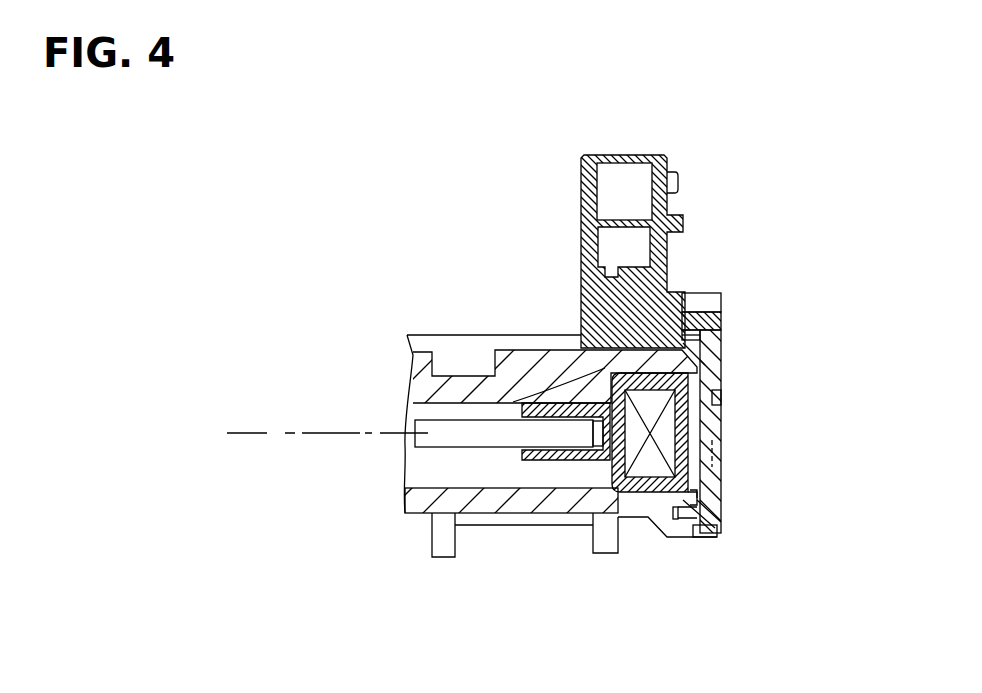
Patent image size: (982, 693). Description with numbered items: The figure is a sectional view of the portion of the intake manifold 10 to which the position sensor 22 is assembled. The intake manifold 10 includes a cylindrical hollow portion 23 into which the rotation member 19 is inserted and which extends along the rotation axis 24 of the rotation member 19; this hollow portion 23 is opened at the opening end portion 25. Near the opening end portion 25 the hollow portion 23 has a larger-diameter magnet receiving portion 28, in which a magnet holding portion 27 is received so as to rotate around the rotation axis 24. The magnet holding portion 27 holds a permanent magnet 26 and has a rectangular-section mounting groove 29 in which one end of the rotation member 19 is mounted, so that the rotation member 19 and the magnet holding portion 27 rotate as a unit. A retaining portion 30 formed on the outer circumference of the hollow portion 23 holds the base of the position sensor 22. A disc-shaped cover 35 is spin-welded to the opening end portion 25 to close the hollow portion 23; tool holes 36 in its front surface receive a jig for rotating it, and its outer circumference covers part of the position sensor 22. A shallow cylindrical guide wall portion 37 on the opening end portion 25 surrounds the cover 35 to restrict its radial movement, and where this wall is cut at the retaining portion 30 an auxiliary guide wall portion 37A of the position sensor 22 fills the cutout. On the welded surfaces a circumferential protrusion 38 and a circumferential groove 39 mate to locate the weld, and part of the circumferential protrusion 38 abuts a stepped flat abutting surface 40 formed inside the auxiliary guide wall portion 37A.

The intake manifold 10 is at (421, 517).
The rotation member 19 is at (475, 437).
The position sensor 22 is at (572, 233).
The hollow portion 23 is at (538, 503).
The rotation axis 24 is at (266, 430).
The opening end portion 25 is at (675, 538).
The magnet 26 is at (668, 425).
The magnet holding portion 27 is at (721, 485).
The magnet receiving portion 28 is at (633, 492).
The mounting groove 29 is at (582, 458).
The retaining portion 30 is at (715, 300).
The cover 35 is at (718, 367).
The tool hole 36 is at (722, 407).
The guide wall portion 37 is at (708, 537).
The auxiliary guide wall portion 37A is at (712, 305).
The circumferential protrusion 38 is at (692, 312).
The circumferential groove 39 is at (699, 522).
The flat abutting surface 40 is at (696, 341).